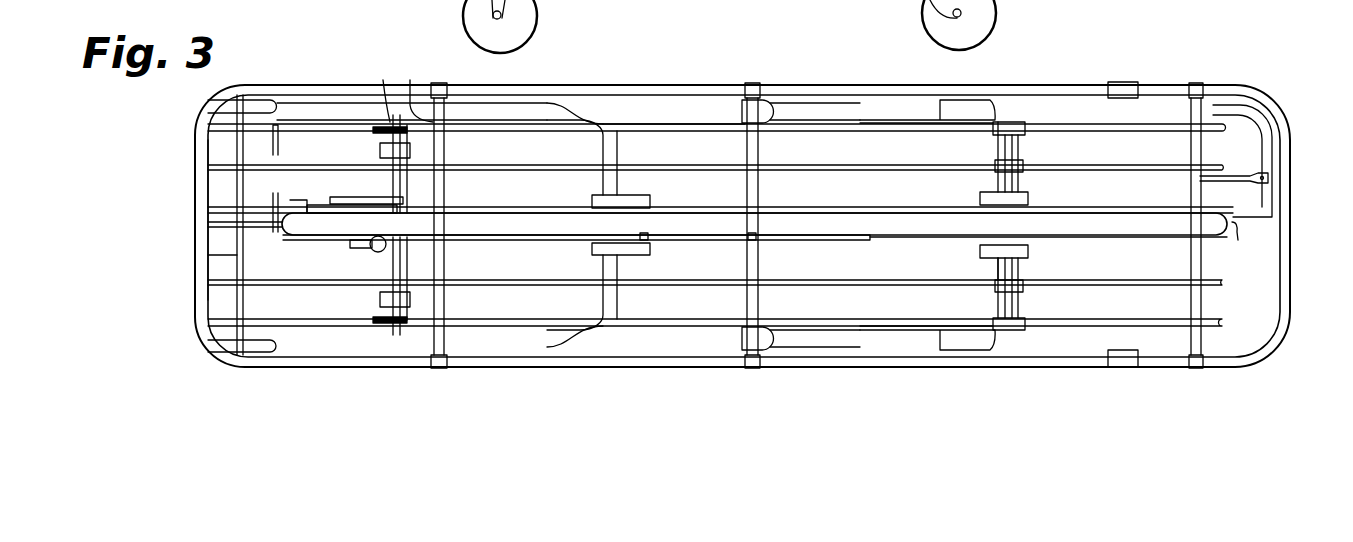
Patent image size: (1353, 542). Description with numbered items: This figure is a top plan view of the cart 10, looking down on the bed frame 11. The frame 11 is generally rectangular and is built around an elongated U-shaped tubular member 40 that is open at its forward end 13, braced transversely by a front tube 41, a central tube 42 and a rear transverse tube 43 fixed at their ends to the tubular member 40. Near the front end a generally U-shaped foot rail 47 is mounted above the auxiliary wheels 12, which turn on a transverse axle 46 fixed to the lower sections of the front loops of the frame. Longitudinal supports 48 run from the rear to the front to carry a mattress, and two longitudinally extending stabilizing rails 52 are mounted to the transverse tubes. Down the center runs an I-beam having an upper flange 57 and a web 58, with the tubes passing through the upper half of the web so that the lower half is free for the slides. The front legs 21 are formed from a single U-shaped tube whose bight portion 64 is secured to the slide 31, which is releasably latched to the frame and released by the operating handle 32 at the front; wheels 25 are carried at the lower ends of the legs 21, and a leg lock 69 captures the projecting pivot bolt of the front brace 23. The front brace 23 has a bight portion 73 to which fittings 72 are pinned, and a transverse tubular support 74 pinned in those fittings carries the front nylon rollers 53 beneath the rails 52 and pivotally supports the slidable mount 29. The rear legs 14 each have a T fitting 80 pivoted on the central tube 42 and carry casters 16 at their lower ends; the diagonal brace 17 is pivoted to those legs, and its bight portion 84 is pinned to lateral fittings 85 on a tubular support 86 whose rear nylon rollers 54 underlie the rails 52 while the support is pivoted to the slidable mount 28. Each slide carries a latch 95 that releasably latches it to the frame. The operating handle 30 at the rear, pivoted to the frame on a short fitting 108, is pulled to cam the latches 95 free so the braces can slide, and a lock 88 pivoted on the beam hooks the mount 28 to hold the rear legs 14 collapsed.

The cart 10 is at (1260, 48).
The bed frame 11 is at (200, 235).
The auxiliary wheels 12 is at (225, 103).
The forward end 13 is at (182, 204).
The rear legs 14 is at (838, 108).
The casters 16 is at (993, 108).
The diagonal brace 17 is at (915, 128).
The front legs 21 is at (565, 100).
The front brace 23 is at (500, 103).
The wheels 25 is at (530, 20).
The slidable mount 28 is at (1010, 212).
The slidable mount 29 is at (357, 192).
The operating handle 30 is at (1250, 112).
The slide 31 is at (652, 198).
The operating handle 32 is at (276, 240).
The U-shaped tubular member 40 is at (703, 85).
The transverse front tube 41 is at (446, 190).
The central tube 42 is at (760, 190).
The rear transverse tube 43 is at (1202, 290).
The transverse axle 46 is at (235, 258).
The foot rail 47 is at (197, 188).
The longitudinal supports 48 is at (850, 175).
The stabilizing rails 52 is at (692, 130).
The front nylon rollers 53 is at (378, 130).
The rear nylon rollers 54 is at (1026, 131).
The upper flange 57 is at (865, 225).
The web 58 is at (905, 215).
The bight portion 64 is at (619, 152).
The leg lock 69 is at (678, 124).
The fitting 72 is at (412, 150).
The bight portion 73 is at (405, 120).
The tubular support 74 is at (392, 120).
The T fitting 80 is at (760, 108).
The bight portion 84 is at (996, 152).
The lateral fittings 85 is at (1022, 162).
The tubular support 86 is at (1000, 296).
The lock 88 is at (1238, 240).
The latch 95 is at (345, 205).
The fitting 108 is at (1245, 160).